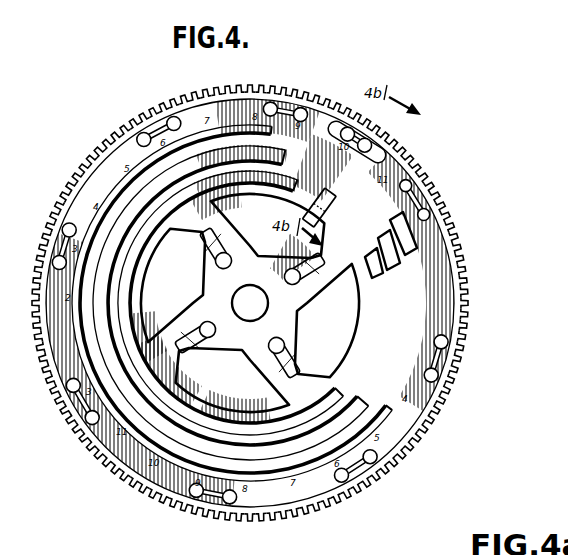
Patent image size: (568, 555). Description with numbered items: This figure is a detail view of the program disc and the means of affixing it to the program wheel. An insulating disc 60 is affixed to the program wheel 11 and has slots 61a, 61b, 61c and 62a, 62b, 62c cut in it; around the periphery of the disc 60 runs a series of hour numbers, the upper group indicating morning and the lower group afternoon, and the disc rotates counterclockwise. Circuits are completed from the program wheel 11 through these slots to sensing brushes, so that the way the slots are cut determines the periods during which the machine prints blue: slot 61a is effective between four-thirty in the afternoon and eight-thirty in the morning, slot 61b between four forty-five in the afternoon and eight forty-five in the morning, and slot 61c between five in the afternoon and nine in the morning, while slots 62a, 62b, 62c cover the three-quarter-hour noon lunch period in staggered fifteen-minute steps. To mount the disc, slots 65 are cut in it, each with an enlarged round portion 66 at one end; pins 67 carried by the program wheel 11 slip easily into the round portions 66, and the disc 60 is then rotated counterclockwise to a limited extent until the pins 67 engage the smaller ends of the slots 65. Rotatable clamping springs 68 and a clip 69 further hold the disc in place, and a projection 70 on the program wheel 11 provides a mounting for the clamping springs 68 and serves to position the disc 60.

The program wheel 11 is at (461, 263).
The insulating disc 60 is at (450, 360).
The slot 61a is at (265, 478).
The slot 61b is at (193, 448).
The slot 61c is at (160, 402).
The slot 62a is at (411, 237).
The slot 62b is at (397, 263).
The slot 62c is at (382, 277).
The slots 65 is at (289, 102).
The enlarged round portion 66 is at (453, 343).
The pins 67 is at (443, 380).
The clamping springs 68 is at (387, 152).
The clip 69 is at (322, 212).
The projection 70 is at (374, 131).